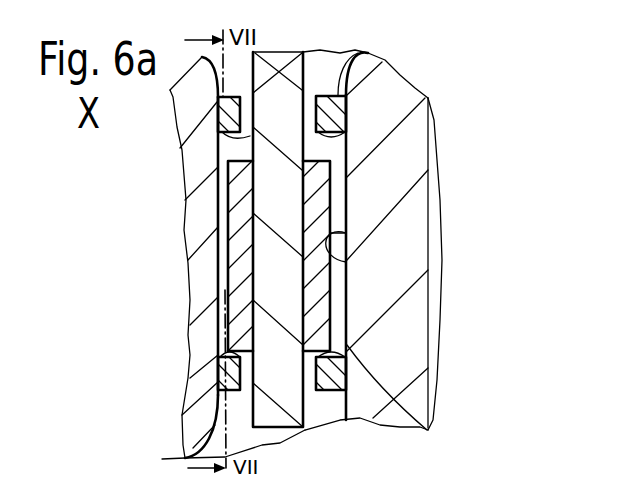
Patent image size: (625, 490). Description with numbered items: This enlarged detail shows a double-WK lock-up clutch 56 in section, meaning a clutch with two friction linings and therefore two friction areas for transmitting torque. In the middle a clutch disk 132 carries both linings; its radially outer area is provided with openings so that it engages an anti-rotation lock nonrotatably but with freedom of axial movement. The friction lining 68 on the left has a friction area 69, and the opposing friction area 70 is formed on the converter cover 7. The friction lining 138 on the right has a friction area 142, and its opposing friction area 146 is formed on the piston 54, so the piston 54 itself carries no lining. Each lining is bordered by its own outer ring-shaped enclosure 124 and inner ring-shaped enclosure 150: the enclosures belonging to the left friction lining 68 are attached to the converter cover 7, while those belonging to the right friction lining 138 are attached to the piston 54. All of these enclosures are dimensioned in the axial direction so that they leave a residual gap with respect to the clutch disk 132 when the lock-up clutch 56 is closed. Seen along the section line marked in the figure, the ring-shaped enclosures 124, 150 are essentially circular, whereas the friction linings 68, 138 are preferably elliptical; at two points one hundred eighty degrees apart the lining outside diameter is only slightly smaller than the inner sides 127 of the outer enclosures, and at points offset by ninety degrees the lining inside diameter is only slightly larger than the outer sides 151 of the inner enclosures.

The converter cover 7 is at (192, 103).
The piston 54 is at (397, 355).
The lock-up clutch 56 is at (322, 441).
The friction lining 68 is at (253, 212).
The friction area 69 is at (227, 161).
The opposing friction area 70 is at (232, 316).
The outer ring-shaped enclosure 124 is at (305, 52).
The inner sides of the outer ring-shaped enclosures 127 is at (250, 136).
The clutch disk 132 is at (270, 203).
The friction lining 138 is at (312, 303).
The friction area 142 is at (332, 193).
The opposing friction area 146 is at (347, 262).
The inner ring-shaped enclosure 150 is at (322, 381).
The outer sides of the inner ring-shaped enclosures 151 is at (228, 350).